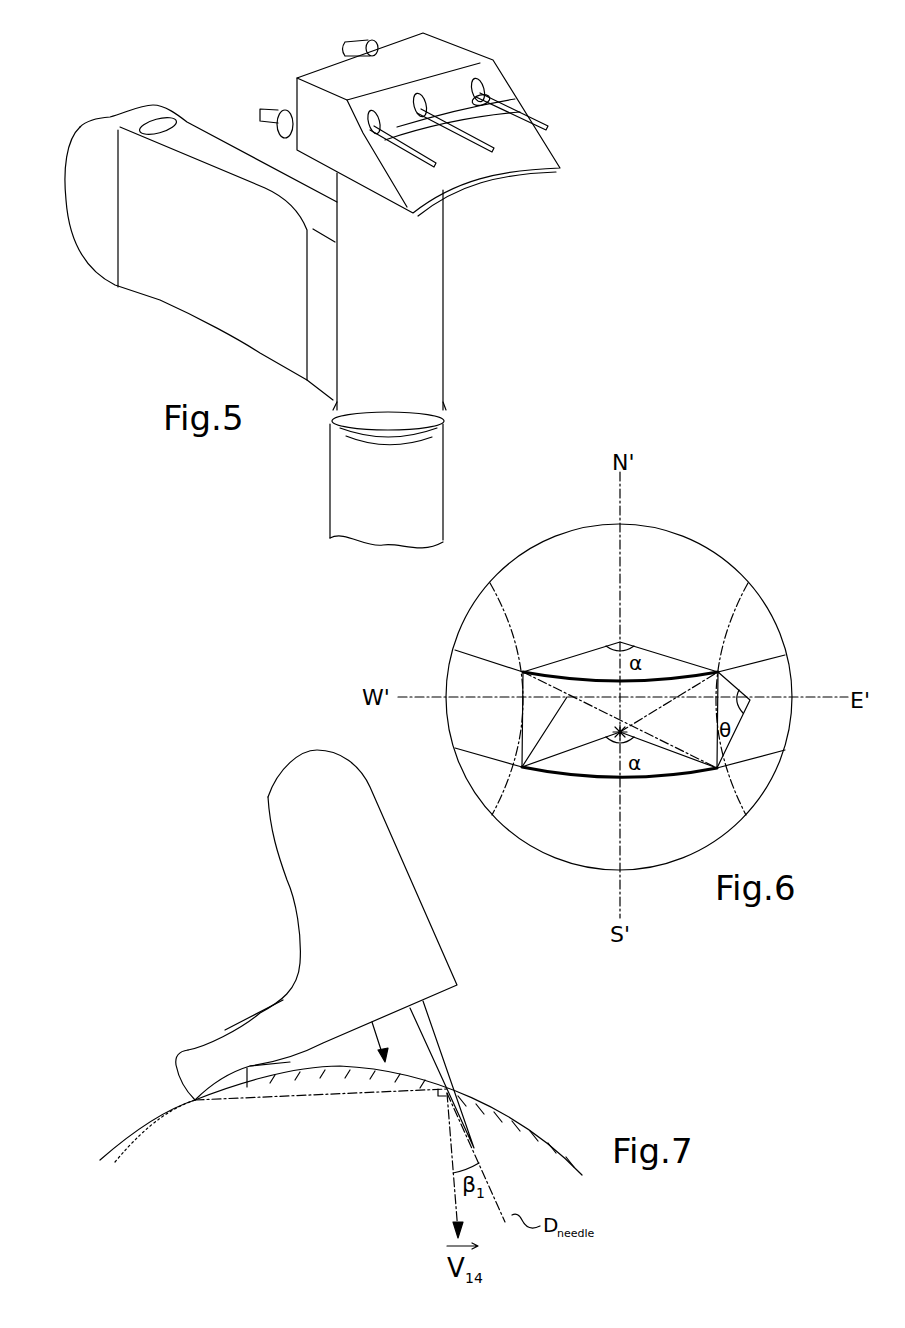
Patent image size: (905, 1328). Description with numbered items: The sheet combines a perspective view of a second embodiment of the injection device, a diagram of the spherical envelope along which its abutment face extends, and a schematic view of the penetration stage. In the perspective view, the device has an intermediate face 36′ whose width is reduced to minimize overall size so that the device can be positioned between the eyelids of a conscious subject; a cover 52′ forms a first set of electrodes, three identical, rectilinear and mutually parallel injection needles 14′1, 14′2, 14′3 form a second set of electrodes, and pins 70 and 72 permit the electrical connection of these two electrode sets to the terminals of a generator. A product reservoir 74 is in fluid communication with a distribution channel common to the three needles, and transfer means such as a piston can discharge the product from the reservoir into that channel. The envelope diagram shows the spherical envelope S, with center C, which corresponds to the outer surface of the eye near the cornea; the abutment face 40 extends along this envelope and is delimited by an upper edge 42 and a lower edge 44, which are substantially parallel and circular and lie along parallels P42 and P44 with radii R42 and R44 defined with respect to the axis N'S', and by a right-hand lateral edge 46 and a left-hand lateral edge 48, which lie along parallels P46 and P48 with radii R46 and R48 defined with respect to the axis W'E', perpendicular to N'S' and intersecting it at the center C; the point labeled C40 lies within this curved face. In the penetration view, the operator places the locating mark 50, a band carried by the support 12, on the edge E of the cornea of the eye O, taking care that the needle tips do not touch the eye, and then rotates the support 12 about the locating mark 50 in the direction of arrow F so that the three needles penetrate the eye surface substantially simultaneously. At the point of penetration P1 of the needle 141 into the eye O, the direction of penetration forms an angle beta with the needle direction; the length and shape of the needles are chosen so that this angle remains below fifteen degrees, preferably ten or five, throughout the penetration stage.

In FIG. 5, the pin 70 is at (262, 112).
In FIG. 5, the pin 72 is at (352, 42).
In FIG. 5, the intermediate face 36′ is at (517, 96).
In FIG. 5, the injection needle 14′1 is at (372, 140).
In FIG. 5, the injection needle 14′2 is at (450, 103).
In FIG. 5, the injection needle 14′3 is at (500, 107).
In FIG. 5, the cover 52′ is at (545, 156).
In FIG. 5, the product reservoir 74 is at (433, 473).
In FIG. 6, the spherical envelope S is at (702, 543).
In FIG. 6, the upper edge 42 is at (500, 667).
In FIG. 6, the lower edge 44 is at (600, 780).
In FIG. 6, the right-hand lateral edge 46 is at (716, 768).
In FIG. 6, the left-hand lateral edge 48 is at (512, 768).
In FIG. 6, the center C is at (612, 644).
In FIG. 6, the center of window 40 C40 is at (624, 732).
In FIG. 6, the radius R42 is at (553, 667).
In FIG. 6, the radius R44 is at (558, 780).
In FIG. 6, the radius R46 is at (740, 752).
In FIG. 6, the radius R48 is at (523, 720).
In FIG. 6, the parallel P42 is at (768, 657).
In FIG. 6, the parallel P44 is at (777, 773).
In FIG. 6, the parallel P46 is at (733, 615).
In FIG. 6, the parallel P48 is at (510, 617).
In FIG. 7, the support 12 is at (427, 960).
In FIG. 7, the locating mark 50 is at (175, 1054).
In FIG. 7, the abutment face 40 is at (250, 1082).
In FIG. 7, the injection needle 141 is at (437, 1040).
In FIG. 7, the edge of the cornea E is at (195, 1104).
In FIG. 7, the eye O is at (528, 1178).
In FIG. 7, the point of penetration P1 is at (460, 1090).
In FIG. 7, the arrow F is at (390, 1042).